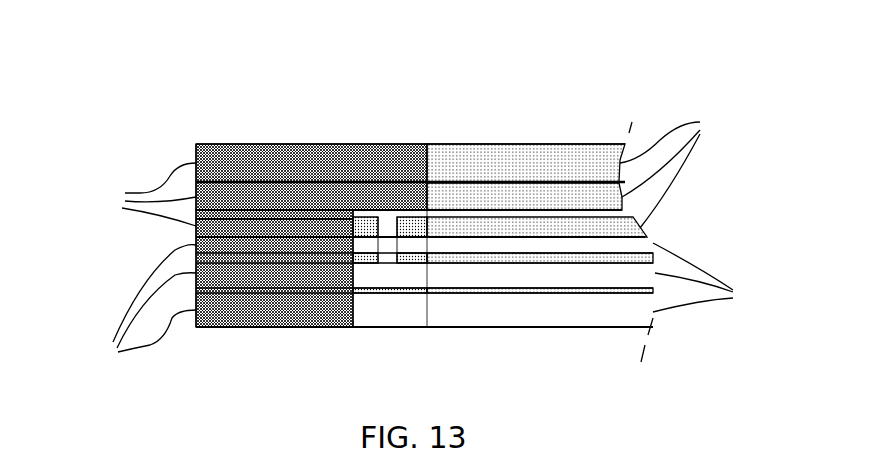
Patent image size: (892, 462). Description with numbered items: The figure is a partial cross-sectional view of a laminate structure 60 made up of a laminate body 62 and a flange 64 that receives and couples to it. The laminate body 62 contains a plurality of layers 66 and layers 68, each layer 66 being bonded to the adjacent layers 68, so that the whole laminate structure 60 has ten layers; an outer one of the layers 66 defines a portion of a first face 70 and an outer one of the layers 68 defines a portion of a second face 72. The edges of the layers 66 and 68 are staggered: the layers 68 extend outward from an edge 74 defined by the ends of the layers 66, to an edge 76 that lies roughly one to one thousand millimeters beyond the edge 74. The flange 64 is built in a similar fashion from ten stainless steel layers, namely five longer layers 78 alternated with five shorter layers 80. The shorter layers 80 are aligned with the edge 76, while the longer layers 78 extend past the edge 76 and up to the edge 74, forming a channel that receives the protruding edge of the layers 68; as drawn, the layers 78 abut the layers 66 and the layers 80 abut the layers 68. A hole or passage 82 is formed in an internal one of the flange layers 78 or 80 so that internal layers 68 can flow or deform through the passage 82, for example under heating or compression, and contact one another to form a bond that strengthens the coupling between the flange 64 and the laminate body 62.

The laminate structure 60 is at (517, 60).
The laminate body 62 is at (547, 126).
The flange 64 is at (193, 126).
The layers 66 is at (674, 173).
The layers 68 is at (708, 277).
The first face 70 is at (320, 134).
The second face 72 is at (533, 339).
The edge 74 is at (427, 134).
The edge 76 is at (352, 339).
The longer layers 78 is at (148, 194).
The shorter layers 80 is at (144, 307).
The passage 82 is at (387, 257).